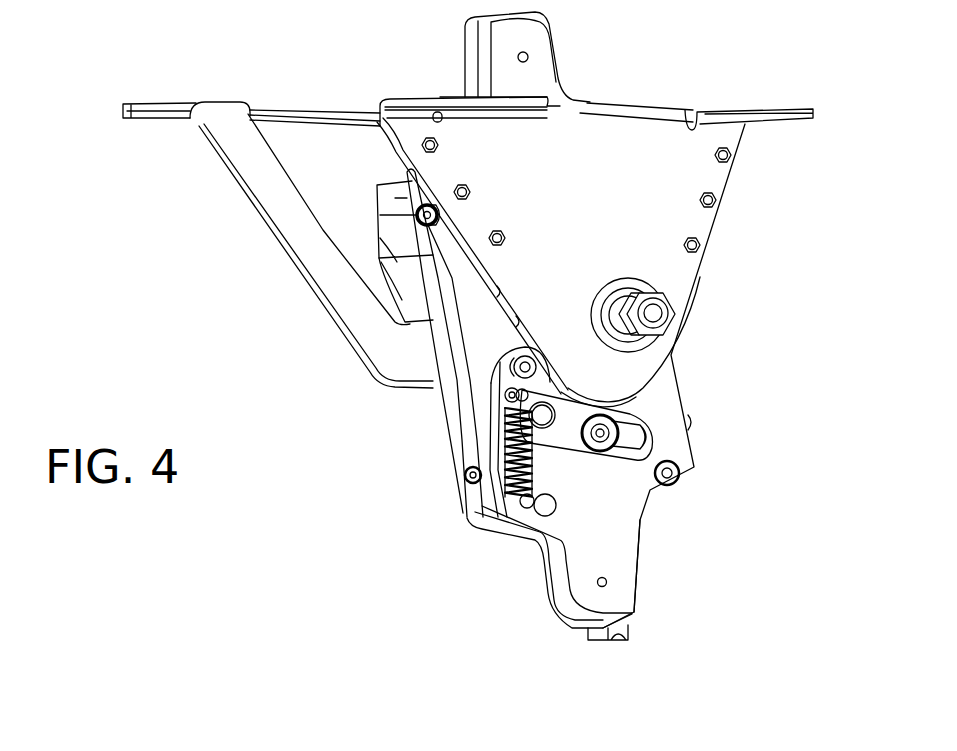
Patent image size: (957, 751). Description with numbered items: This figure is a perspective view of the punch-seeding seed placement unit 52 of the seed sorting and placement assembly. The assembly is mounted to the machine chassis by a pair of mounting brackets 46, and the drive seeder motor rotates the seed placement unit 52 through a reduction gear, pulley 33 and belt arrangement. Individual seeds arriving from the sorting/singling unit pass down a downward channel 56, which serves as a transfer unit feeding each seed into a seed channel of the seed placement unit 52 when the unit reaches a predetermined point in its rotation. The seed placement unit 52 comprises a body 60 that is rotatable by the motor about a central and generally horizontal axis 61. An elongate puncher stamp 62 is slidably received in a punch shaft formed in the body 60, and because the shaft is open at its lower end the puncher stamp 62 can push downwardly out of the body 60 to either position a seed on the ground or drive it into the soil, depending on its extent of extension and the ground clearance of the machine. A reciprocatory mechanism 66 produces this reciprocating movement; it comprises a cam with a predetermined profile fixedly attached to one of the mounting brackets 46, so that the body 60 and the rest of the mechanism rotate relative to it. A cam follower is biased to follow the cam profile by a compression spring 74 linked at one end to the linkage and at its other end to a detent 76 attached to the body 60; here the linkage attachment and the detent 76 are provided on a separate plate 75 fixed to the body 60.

The pulley 33 is at (653, 341).
The mounting brackets 46 is at (330, 268).
The seed placement unit 52 is at (591, 509).
The downward channel 56 is at (395, 260).
The body 60 is at (617, 546).
The axis 61 is at (664, 302).
The puncher stamp 62 is at (630, 643).
The reciprocatory mechanism 66 is at (575, 462).
The compression spring 74 is at (503, 445).
The plate 75 is at (493, 412).
The detent 76 is at (470, 520).